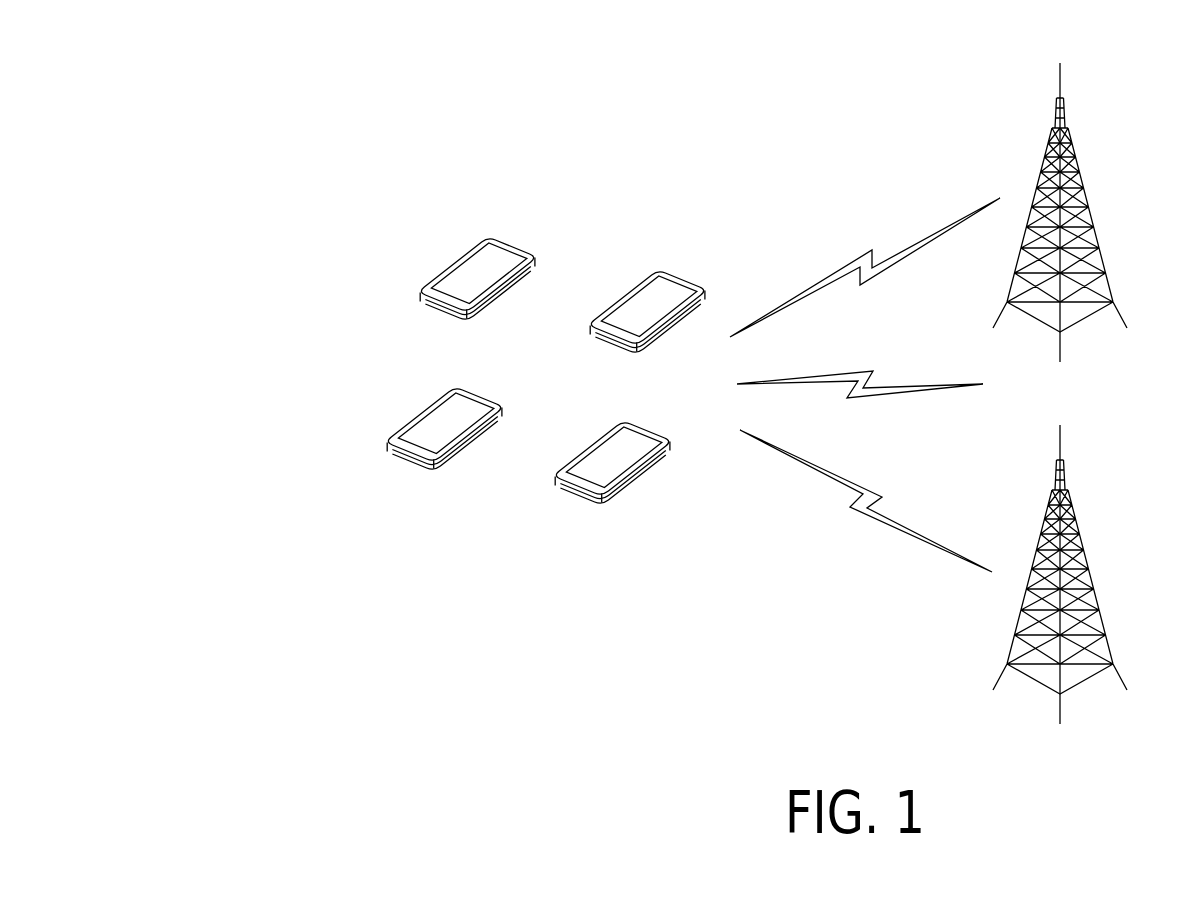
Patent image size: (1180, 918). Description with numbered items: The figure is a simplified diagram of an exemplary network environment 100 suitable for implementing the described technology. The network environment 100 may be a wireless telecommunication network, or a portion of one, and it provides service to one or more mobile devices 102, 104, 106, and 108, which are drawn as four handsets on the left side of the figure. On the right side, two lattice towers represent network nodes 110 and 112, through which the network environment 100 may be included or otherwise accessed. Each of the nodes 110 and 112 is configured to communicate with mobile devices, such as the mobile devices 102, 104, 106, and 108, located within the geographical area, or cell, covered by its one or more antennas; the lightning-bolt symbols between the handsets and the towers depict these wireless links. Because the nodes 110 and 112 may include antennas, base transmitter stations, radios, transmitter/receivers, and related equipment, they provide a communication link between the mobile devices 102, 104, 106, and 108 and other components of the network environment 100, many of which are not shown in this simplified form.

The network environment 100 is at (228, 128).
The mobile device 102 is at (659, 268).
The mobile device 104 is at (492, 233).
The mobile device 106 is at (432, 472).
The mobile device 108 is at (600, 507).
The network node 110 is at (1088, 207).
The network node 112 is at (1088, 569).